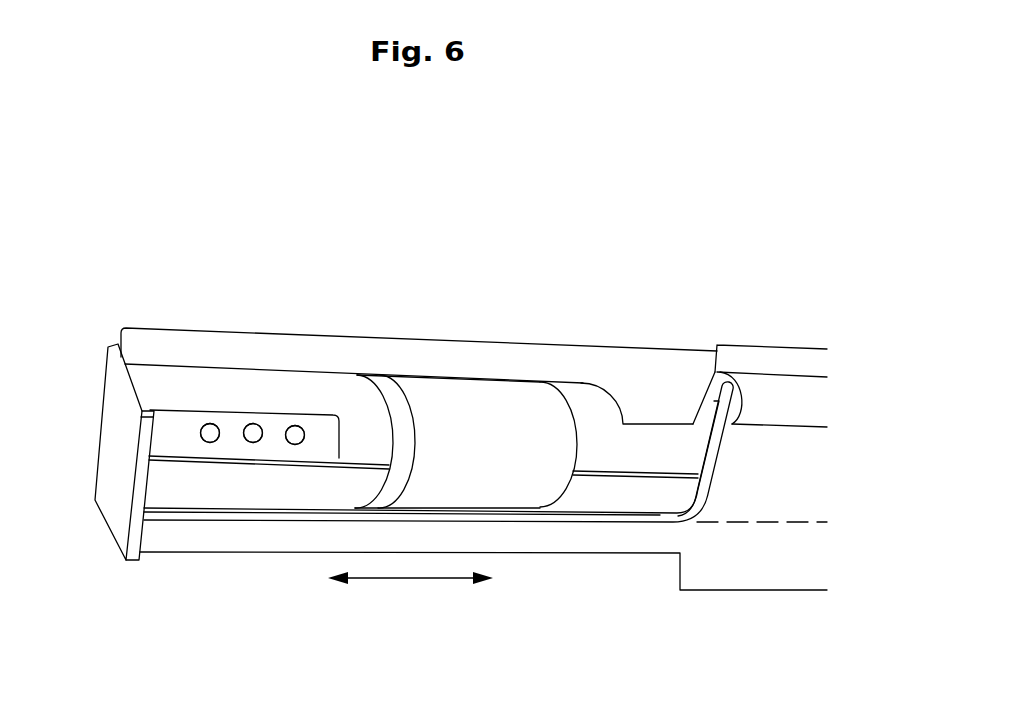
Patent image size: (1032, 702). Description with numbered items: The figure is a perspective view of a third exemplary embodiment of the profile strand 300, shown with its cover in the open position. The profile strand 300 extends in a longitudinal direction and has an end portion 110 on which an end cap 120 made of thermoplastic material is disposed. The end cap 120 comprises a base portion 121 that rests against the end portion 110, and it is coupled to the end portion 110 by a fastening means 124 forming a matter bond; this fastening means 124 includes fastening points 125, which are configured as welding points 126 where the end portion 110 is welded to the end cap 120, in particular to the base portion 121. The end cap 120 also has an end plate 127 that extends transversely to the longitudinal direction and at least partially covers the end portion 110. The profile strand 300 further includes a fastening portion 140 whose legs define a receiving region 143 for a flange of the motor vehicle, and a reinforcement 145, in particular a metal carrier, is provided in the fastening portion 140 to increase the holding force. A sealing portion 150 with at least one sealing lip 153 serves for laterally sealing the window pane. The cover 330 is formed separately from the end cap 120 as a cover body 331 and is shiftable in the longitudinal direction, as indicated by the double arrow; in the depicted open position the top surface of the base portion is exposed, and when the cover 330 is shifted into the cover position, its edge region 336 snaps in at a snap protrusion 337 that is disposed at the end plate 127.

The end portion 110 is at (291, 556).
The end cap 120 is at (91, 461).
The base portion 121 is at (173, 412).
The fastening means 124 is at (293, 444).
The fastening points 125 is at (211, 424).
The welding points 126 is at (295, 426).
The end plate 127 is at (112, 407).
The fastening portion 140 is at (682, 418).
The receiving region 143 is at (636, 392).
The reinforcement 145 is at (652, 512).
The sealing portion 150 is at (755, 420).
The sealing lip 153 is at (793, 395).
The profile strand 300 is at (454, 328).
The cover 330 is at (436, 409).
The cover body 331 is at (508, 413).
The edge region 336 is at (403, 457).
The snap protrusion 337 is at (143, 483).